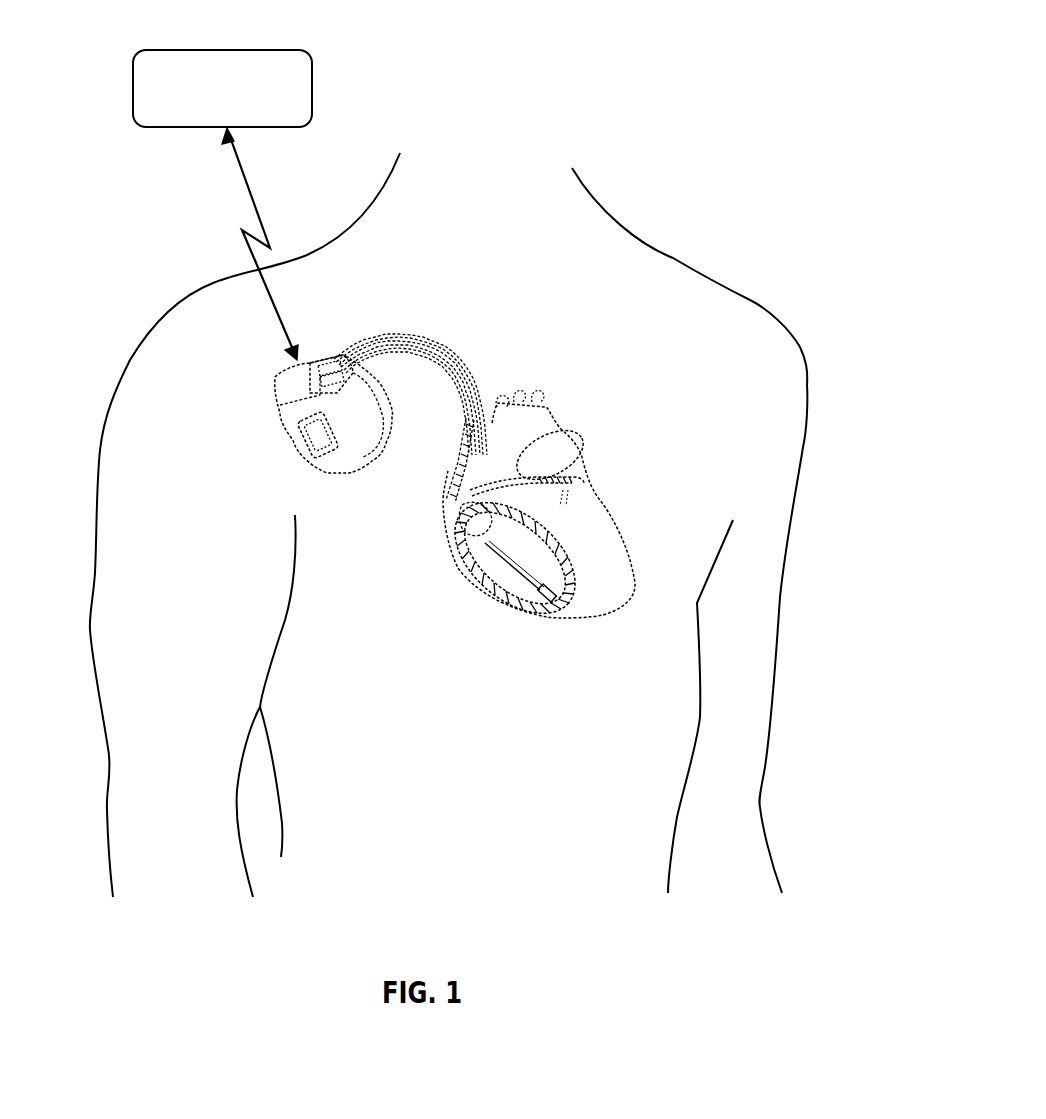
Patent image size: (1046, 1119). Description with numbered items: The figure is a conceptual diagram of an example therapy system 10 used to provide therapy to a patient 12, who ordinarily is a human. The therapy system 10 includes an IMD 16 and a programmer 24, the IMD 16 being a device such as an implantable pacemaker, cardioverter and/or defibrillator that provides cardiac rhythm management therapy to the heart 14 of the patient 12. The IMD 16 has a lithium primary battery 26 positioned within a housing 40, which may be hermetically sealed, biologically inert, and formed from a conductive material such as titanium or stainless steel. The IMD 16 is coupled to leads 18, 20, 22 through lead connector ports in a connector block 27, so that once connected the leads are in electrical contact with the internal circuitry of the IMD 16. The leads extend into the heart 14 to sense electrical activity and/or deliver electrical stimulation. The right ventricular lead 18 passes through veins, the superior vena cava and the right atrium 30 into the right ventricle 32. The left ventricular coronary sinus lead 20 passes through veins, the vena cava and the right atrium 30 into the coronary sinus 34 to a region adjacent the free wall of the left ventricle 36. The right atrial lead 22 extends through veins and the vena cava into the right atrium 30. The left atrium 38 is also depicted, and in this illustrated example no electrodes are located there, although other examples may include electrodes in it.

The therapy system 10 is at (634, 42).
The patient 12 is at (673, 258).
The heart 14 is at (525, 536).
The IMD 16 is at (308, 431).
The right ventricular lead 18 is at (443, 358).
The left ventricular coronary sinus lead 20 is at (480, 372).
The right atrial lead 22 is at (462, 388).
The programmer 24 is at (234, 110).
The lithium primary battery 26 is at (288, 437).
The connector block 27 is at (285, 393).
The right atrium 30 is at (458, 515).
The right ventricle 32 is at (495, 577).
The coronary sinus 34 is at (508, 488).
The left ventricle 36 is at (607, 532).
The left atrium 38 is at (545, 428).
The housing 40 is at (357, 445).